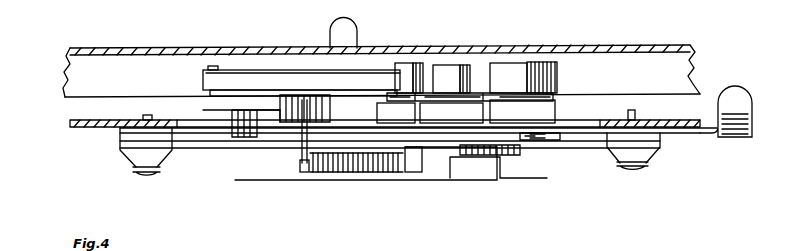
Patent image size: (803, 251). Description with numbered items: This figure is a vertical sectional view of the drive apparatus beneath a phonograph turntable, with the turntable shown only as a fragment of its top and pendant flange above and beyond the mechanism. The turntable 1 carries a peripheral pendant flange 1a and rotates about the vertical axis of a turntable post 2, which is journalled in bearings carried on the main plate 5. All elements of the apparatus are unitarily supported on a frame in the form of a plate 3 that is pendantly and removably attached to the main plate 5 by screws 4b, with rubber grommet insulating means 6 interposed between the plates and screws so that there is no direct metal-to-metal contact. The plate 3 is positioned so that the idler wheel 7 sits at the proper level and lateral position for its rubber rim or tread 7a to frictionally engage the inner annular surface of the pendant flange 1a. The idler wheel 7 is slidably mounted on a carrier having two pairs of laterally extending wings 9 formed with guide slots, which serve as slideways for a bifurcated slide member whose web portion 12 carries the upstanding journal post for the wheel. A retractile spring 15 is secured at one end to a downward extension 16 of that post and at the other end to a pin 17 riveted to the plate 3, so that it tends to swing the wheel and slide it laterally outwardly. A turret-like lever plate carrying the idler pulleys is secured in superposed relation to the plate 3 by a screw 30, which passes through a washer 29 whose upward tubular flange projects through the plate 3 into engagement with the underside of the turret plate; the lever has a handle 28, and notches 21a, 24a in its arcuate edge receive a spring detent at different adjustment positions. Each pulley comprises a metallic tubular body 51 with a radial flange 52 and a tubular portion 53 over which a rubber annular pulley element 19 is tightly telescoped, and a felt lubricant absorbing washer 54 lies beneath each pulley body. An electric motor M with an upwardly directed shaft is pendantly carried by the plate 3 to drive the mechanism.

The turntable 1 is at (118, 49).
The peripheral pendant flange 1a is at (134, 73).
The turntable post 2 is at (345, 27).
The plate 3 is at (208, 144).
The screws 4b is at (147, 179).
The main plate 5 is at (92, 128).
The rubber grommet insulating means 6 is at (167, 160).
The idler wheel 7 is at (234, 69).
The rubber rim or tread 7a is at (216, 67).
The wings 9 is at (257, 118).
The web portion 12 is at (303, 124).
The retractile spring 15 is at (384, 173).
The downward extension 16 is at (307, 168).
The pin 17 is at (415, 169).
The annular pulley element 19 is at (553, 108).
The notch 21a is at (428, 134).
The notch 24a is at (532, 140).
The handle 28 is at (697, 118).
The washer 29 is at (531, 141).
The screw 30 is at (507, 156).
The metallic tubular body 51 is at (403, 63).
The radial flange 52 is at (419, 65).
The tubular portion 53 is at (533, 133).
The lubricant absorbing washer 54 is at (532, 137).
The electric motor M is at (478, 172).